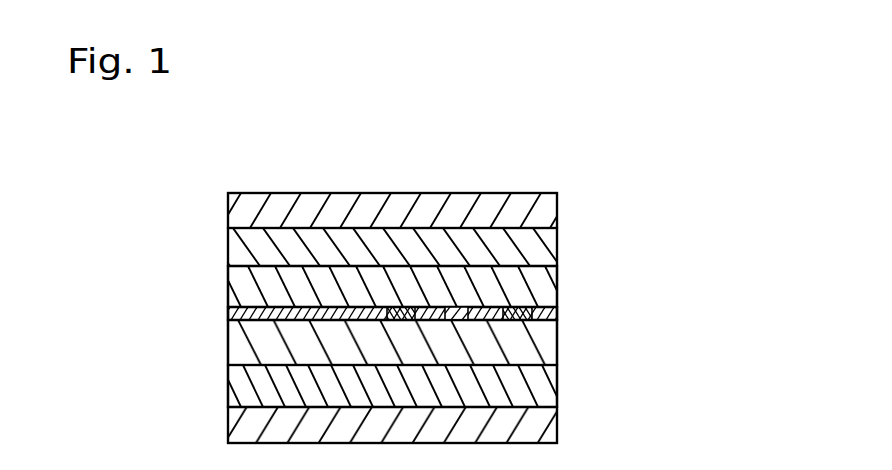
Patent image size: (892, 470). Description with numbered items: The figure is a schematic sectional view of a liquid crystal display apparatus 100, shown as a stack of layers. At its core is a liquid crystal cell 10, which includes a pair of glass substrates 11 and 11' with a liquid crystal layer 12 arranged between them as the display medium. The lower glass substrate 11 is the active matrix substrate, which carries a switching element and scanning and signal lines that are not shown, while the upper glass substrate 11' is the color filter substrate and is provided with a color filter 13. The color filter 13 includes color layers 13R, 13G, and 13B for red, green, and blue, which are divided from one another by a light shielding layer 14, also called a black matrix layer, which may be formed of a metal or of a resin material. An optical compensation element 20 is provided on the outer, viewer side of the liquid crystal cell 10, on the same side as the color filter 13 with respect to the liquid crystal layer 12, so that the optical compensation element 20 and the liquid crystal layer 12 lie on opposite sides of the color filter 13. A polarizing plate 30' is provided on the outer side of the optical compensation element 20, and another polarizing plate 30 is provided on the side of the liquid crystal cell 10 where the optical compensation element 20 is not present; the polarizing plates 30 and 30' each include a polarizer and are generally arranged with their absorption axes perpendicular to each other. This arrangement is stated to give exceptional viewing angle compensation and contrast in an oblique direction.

The liquid crystal display apparatus 100 is at (648, 92).
The polarizing plate 30' is at (435, 210).
The optical compensation element 20 is at (547, 248).
The glass substrate 11' is at (350, 285).
The light shielding layer 14 is at (303, 306).
The color filter 13 is at (537, 117).
The color layer 13R is at (394, 306).
The color layer 13G is at (451, 306).
The color layer 13B is at (512, 306).
The liquid crystal layer 12 is at (238, 341).
The glass substrate 11 is at (352, 386).
The polarizing plate 30 is at (435, 425).
The liquid crystal cell 10 is at (578, 268).